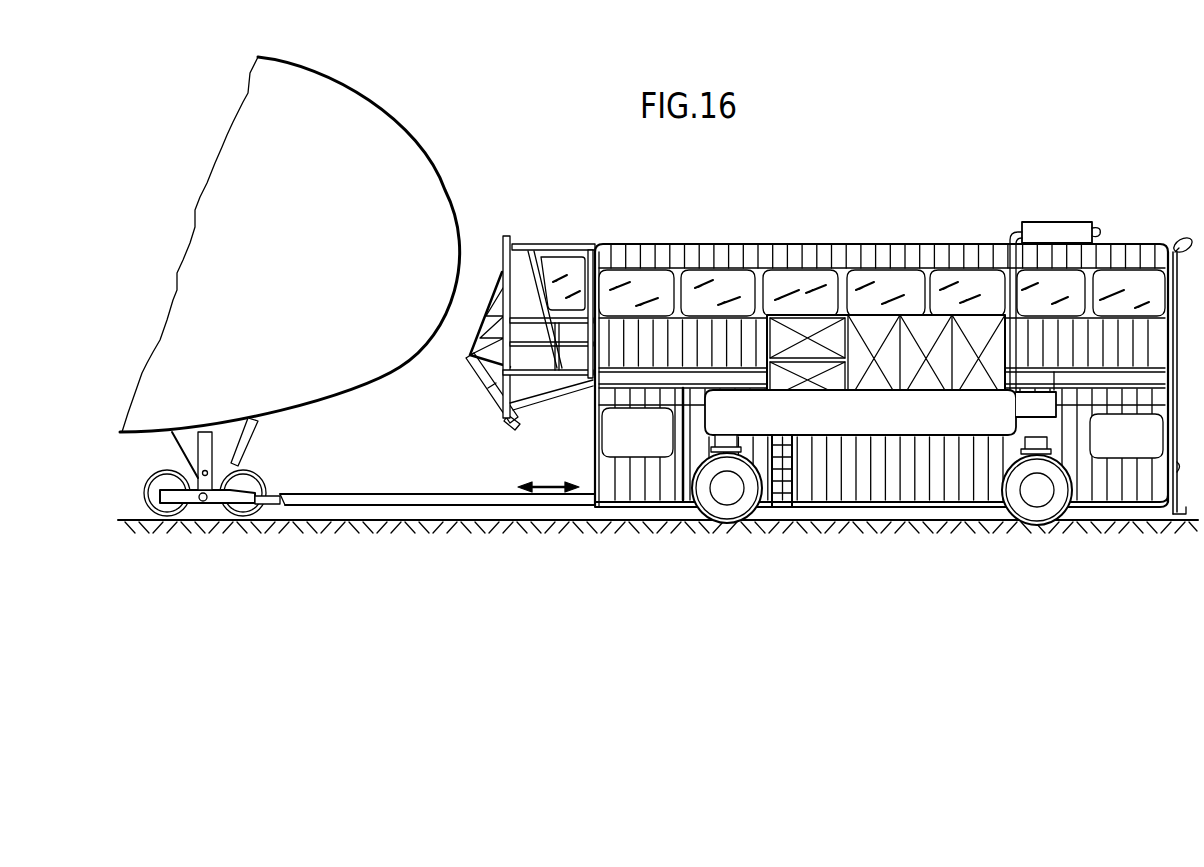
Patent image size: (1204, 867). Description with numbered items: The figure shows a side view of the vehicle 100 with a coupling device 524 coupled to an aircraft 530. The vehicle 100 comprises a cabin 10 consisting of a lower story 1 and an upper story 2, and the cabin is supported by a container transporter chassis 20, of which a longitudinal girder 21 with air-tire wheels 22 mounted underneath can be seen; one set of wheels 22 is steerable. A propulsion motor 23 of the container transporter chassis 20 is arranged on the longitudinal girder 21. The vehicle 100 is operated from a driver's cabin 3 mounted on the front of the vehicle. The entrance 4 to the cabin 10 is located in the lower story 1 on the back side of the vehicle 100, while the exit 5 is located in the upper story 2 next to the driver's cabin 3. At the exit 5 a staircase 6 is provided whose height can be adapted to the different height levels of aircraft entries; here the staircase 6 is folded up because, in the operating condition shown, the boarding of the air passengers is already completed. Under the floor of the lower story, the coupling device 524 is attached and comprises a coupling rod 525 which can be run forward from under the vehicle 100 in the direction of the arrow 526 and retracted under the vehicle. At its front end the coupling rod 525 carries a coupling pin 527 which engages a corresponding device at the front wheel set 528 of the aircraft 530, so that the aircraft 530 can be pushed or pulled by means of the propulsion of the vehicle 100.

The vehicle 100 is at (1131, 215).
The cabin 10 is at (962, 243).
The lower story 1 is at (1177, 429).
The upper story 2 is at (1177, 316).
The entrance 4 is at (1176, 468).
The air-tire wheels 22 is at (724, 495).
The container transporter chassis 20 is at (836, 433).
The longitudinal girder 21 is at (953, 425).
The propulsion motor 23 is at (874, 322).
The driver's cabin 3 is at (531, 245).
The exit 5 is at (590, 275).
The staircase 6 is at (476, 367).
The aircraft 530 is at (428, 152).
The front wheel set 528 is at (178, 466).
The coupling pin 527 is at (278, 490).
The coupling rod 525 is at (452, 498).
The coupling device 524 is at (384, 448).
The arrow 526 is at (546, 484).